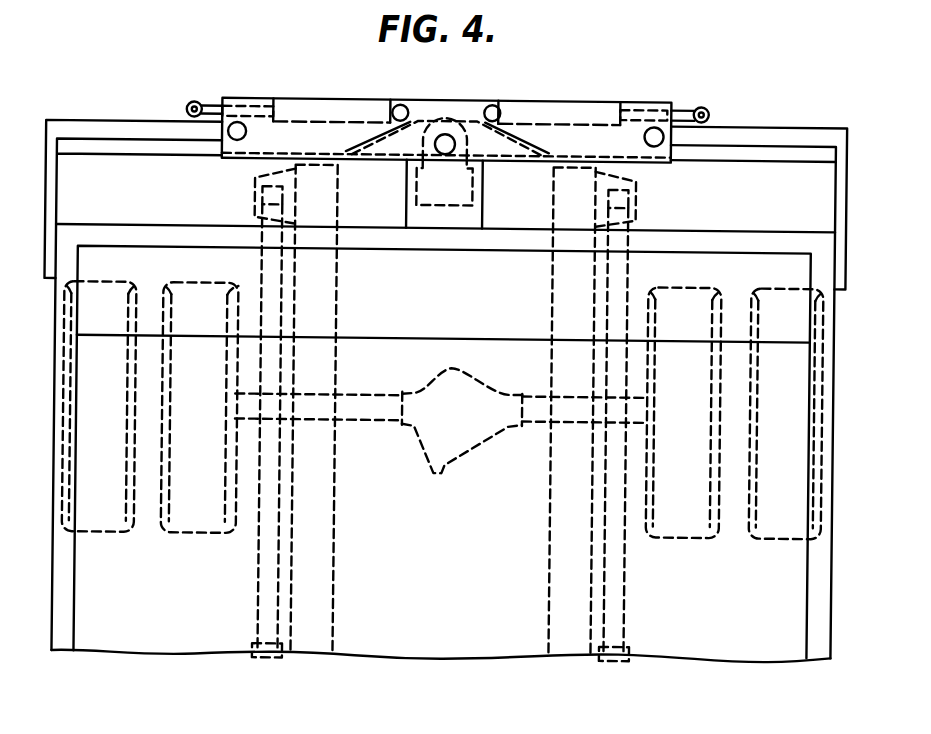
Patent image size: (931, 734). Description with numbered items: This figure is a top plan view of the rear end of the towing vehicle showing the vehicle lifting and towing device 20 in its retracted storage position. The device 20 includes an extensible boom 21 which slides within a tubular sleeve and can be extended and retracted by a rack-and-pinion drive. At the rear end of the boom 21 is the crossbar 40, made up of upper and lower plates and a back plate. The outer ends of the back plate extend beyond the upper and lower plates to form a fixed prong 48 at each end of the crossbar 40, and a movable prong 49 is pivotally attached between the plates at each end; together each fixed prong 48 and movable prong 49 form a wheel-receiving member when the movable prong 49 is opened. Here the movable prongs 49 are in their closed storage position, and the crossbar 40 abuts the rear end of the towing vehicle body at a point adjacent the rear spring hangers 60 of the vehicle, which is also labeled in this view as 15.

The panel 15 is at (790, 597).
The vehicle lifting and towing device 20 is at (596, 87).
The extensible boom 21 is at (460, 183).
The crossbar 40 is at (440, 95).
The fixed prong 48 is at (152, 144).
The movable prong 49 is at (132, 126).
The rear spring hangers 60 is at (638, 184).